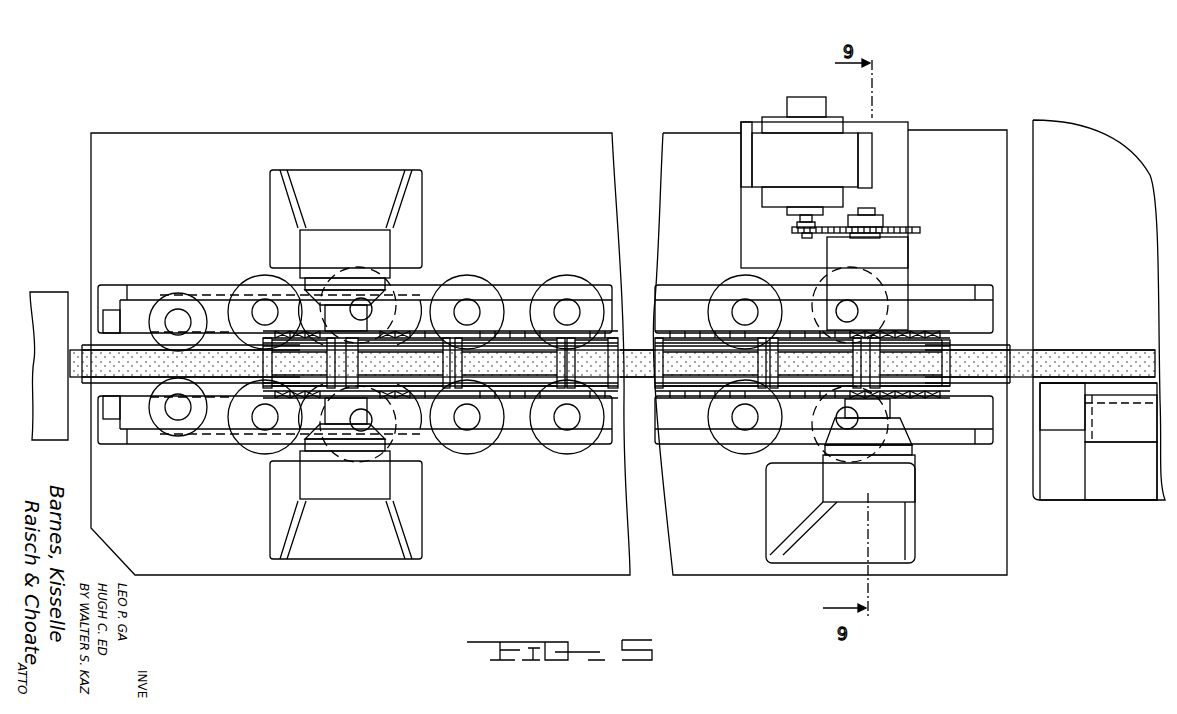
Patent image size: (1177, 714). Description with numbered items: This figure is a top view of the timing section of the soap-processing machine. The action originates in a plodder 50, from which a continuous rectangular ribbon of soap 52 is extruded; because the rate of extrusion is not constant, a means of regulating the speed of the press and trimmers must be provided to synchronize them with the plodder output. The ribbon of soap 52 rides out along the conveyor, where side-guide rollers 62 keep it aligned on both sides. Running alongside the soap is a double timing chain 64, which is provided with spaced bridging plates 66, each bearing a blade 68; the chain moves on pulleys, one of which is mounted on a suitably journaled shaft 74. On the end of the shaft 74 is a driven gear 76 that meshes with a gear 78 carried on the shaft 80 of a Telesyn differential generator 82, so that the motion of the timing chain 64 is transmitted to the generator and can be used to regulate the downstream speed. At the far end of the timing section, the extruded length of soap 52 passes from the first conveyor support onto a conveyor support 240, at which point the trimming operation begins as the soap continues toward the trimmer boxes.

The plodder 50 is at (52, 297).
The ribbon of soap 52 is at (105, 378).
The side-guide rollers 62 is at (252, 284).
The double timing chain 64 is at (372, 332).
The bridging plates 66 is at (346, 383).
The blade 68 is at (452, 360).
The shaft 74 is at (870, 211).
The driven gear 76 is at (920, 230).
The gear 78 is at (807, 233).
The shaft 80 is at (800, 223).
The Telesyn differential generator 82 is at (768, 162).
The conveyor support 240 is at (1058, 370).